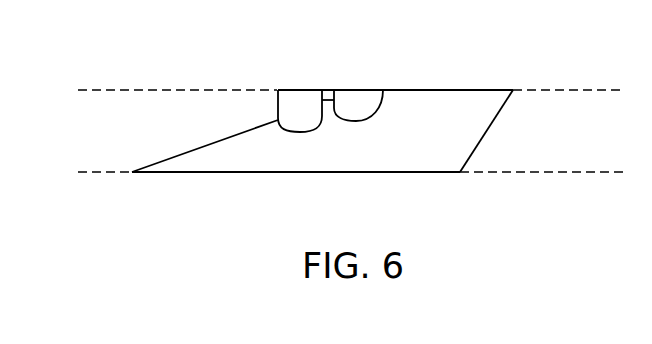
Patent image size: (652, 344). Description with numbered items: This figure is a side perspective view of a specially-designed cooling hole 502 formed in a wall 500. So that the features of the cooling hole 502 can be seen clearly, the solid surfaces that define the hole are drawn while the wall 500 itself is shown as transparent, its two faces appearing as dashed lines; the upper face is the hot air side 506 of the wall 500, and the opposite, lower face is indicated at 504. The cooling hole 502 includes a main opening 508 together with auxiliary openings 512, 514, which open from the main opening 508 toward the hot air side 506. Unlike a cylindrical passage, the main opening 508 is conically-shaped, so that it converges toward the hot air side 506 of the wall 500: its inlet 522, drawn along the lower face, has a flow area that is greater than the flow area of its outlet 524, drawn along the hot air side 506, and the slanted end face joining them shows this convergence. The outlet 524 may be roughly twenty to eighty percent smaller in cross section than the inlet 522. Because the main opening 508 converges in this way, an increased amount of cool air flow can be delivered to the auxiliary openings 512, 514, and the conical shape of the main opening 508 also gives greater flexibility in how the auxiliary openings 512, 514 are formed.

The wall 500 is at (140, 112).
The cooling hole 502 is at (497, 135).
The lower reference plane 504 is at (113, 173).
The hot air side 506 is at (197, 90).
The main opening 508 is at (492, 109).
The auxiliary opening 512 is at (302, 90).
The auxiliary opening 514 is at (352, 91).
The inlet 522 is at (365, 173).
The outlet 524 is at (493, 90).